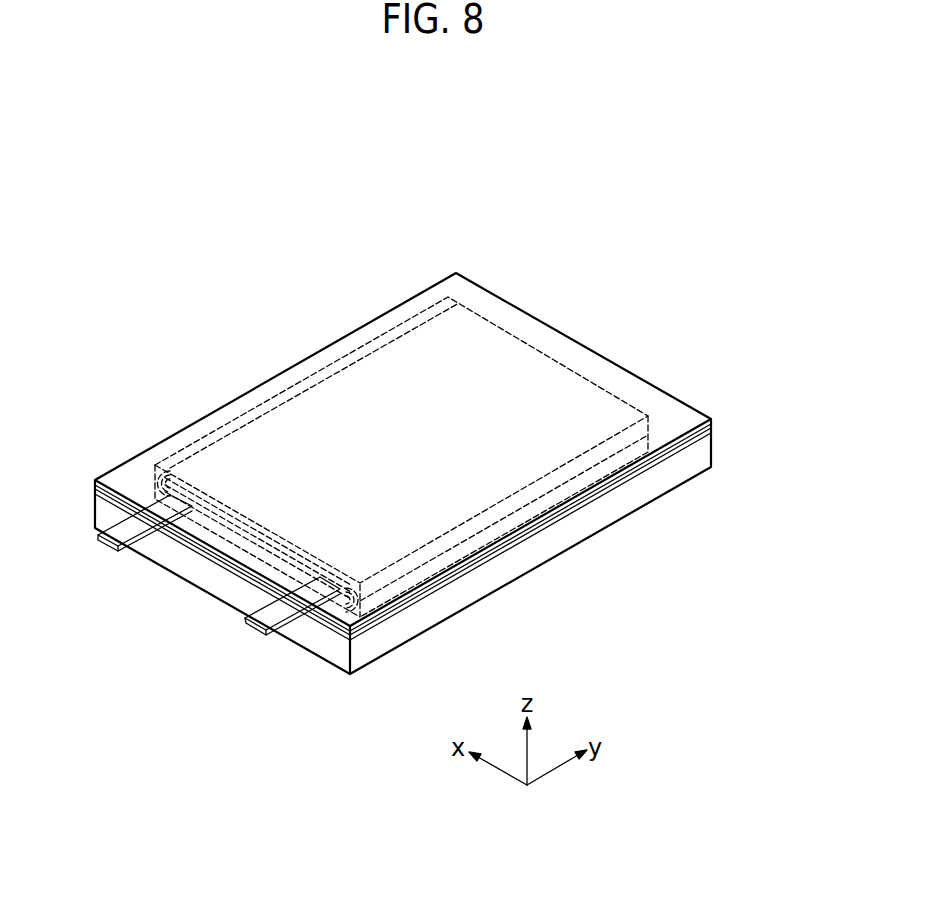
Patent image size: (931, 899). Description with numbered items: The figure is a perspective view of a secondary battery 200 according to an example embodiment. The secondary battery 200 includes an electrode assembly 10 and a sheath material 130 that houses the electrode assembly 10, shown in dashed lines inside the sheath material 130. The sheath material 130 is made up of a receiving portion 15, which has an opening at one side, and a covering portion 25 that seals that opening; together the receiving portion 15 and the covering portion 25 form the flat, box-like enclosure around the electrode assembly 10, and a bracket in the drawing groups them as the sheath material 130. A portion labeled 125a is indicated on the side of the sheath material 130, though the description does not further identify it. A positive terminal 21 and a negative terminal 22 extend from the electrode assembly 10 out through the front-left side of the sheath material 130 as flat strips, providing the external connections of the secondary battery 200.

The secondary battery 200 is at (452, 171).
The electrode assembly 10 is at (356, 361).
The sheath material 130 is at (772, 372).
The covering portion 25 is at (668, 410).
The receiving portion 15 is at (697, 453).
The side sealing portion 125a is at (548, 525).
The negative terminal 22 is at (118, 541).
The positive terminal 21 is at (262, 622).